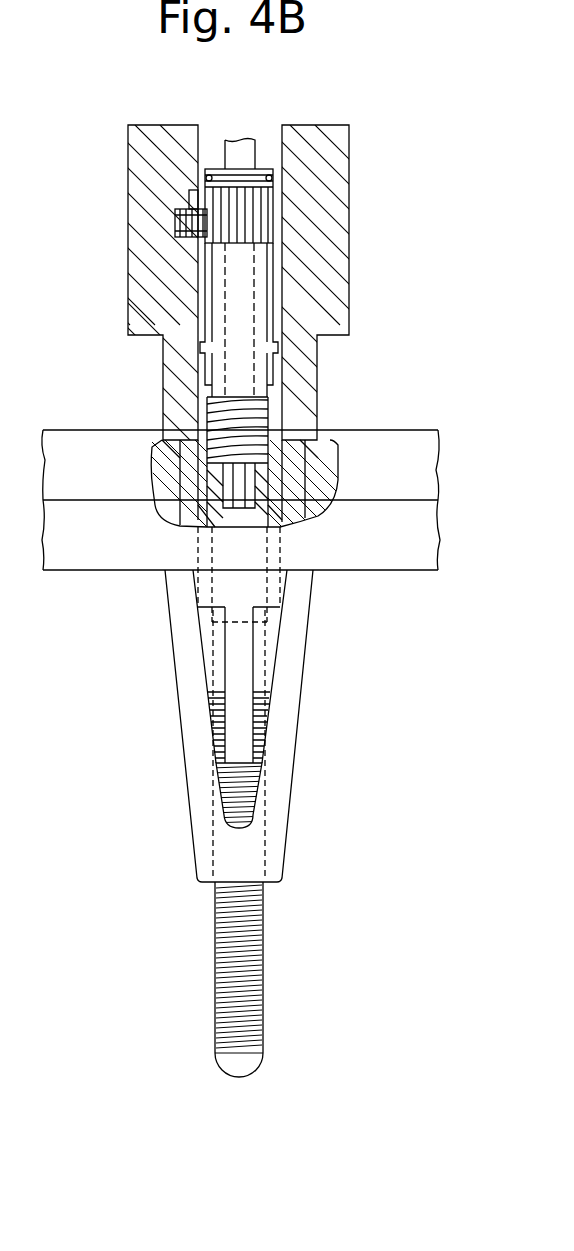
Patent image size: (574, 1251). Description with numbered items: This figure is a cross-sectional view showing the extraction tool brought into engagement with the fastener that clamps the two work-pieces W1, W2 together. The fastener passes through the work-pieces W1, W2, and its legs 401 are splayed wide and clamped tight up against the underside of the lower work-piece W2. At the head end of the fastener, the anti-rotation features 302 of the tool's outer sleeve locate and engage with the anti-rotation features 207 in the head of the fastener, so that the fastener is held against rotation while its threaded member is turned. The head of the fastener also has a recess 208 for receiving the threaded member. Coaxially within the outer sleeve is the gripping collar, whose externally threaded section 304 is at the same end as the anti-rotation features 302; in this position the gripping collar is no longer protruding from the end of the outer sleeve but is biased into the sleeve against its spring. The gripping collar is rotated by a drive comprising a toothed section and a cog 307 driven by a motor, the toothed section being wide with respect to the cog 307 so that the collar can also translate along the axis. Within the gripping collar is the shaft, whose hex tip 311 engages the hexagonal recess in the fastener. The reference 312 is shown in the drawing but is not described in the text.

The recess 208 is at (262, 170).
The cog 307 is at (176, 223).
The anti-rotation features 302 is at (305, 429).
The externally threaded section 304 is at (226, 397).
The anti-rotation grooves 207 is at (207, 450).
The hex tip of the shaft 311 is at (233, 465).
The inner bore 312 is at (233, 510).
The legs 401 is at (203, 804).
The work-piece W1 is at (400, 429).
The work-piece W2 is at (372, 571).